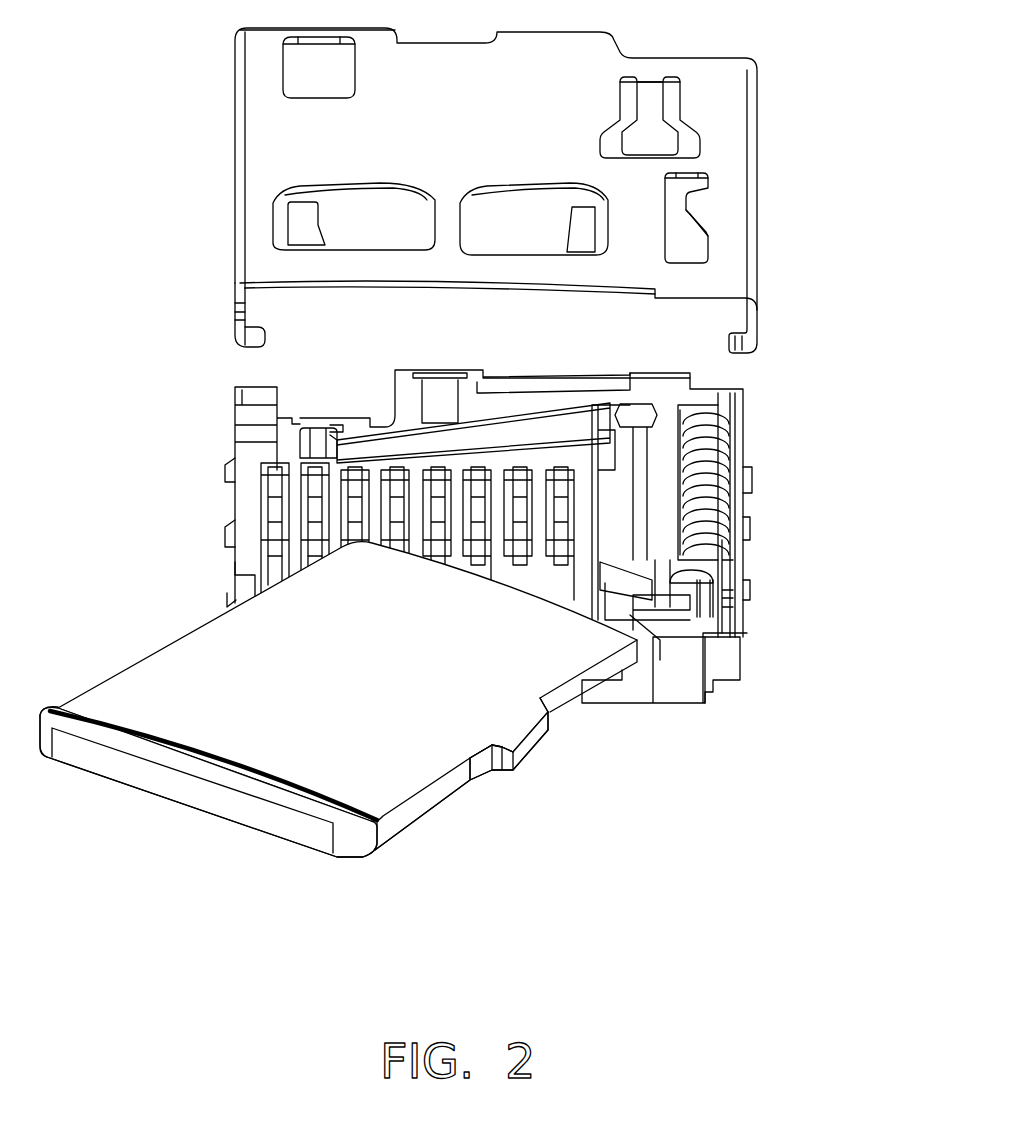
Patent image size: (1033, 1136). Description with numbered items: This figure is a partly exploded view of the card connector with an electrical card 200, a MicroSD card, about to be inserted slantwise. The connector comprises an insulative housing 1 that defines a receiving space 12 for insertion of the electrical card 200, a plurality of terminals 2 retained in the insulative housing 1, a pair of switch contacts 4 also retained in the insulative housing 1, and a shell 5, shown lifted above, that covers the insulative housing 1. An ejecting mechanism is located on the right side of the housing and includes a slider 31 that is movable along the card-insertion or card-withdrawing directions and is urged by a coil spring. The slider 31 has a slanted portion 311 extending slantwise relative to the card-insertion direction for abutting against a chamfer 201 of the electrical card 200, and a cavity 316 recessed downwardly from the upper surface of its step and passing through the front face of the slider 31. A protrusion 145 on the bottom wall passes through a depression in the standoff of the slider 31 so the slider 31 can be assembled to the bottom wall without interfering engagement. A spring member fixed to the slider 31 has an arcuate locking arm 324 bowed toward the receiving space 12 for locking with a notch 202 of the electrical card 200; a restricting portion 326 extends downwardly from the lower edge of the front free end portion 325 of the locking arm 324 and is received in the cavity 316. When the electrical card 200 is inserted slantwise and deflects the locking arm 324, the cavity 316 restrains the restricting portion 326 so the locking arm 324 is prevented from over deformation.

The insulative housing 1 is at (258, 452).
The terminals 2 is at (280, 498).
The switch contacts 4 is at (508, 440).
The shell 5 is at (725, 270).
The receiving space 12 is at (295, 547).
The slider 31 is at (695, 560).
The protrusion 145 is at (725, 558).
The electrical card 200 is at (338, 744).
The chamfer 201 is at (550, 712).
The notch 202 is at (493, 780).
The slanted portion 311 is at (655, 518).
The cavity 316 is at (640, 645).
The locking arm 324 is at (673, 570).
The free end portion 325 is at (668, 608).
The restricting portion 326 is at (712, 692).